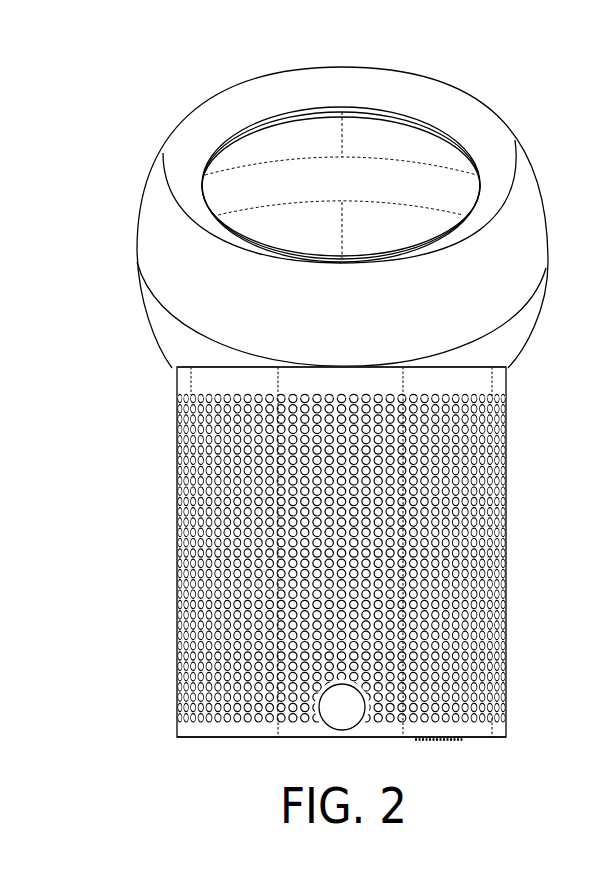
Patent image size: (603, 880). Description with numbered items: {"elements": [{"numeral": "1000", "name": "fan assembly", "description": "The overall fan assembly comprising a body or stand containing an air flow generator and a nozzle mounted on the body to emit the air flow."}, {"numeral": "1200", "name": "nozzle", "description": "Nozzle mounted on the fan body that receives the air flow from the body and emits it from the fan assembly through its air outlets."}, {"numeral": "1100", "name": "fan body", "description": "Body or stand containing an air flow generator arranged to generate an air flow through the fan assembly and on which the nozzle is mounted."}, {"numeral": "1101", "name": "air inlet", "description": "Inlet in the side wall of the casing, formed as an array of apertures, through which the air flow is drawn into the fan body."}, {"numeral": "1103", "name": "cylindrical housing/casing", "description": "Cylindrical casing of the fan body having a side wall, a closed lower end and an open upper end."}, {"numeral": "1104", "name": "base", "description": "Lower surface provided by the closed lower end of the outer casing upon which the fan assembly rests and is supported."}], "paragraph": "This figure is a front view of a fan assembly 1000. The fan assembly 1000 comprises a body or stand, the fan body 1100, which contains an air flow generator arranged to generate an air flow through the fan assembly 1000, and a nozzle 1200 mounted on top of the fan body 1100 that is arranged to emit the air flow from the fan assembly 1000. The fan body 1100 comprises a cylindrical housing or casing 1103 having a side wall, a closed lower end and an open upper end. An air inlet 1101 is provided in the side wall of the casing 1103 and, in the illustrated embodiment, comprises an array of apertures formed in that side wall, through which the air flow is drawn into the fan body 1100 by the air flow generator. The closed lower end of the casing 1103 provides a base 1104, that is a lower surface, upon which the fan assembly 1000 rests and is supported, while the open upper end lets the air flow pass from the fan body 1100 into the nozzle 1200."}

The air treatment device 1000 is at (147, 74).
The upper body (annular nozzle) 1200 is at (148, 265).
The base (lower body) 1100 is at (177, 565).
The perforated side wall (air inlet) 1101 is at (506, 552).
The upper edge of base 1103 is at (502, 386).
The lower edge of base 1104 is at (392, 739).